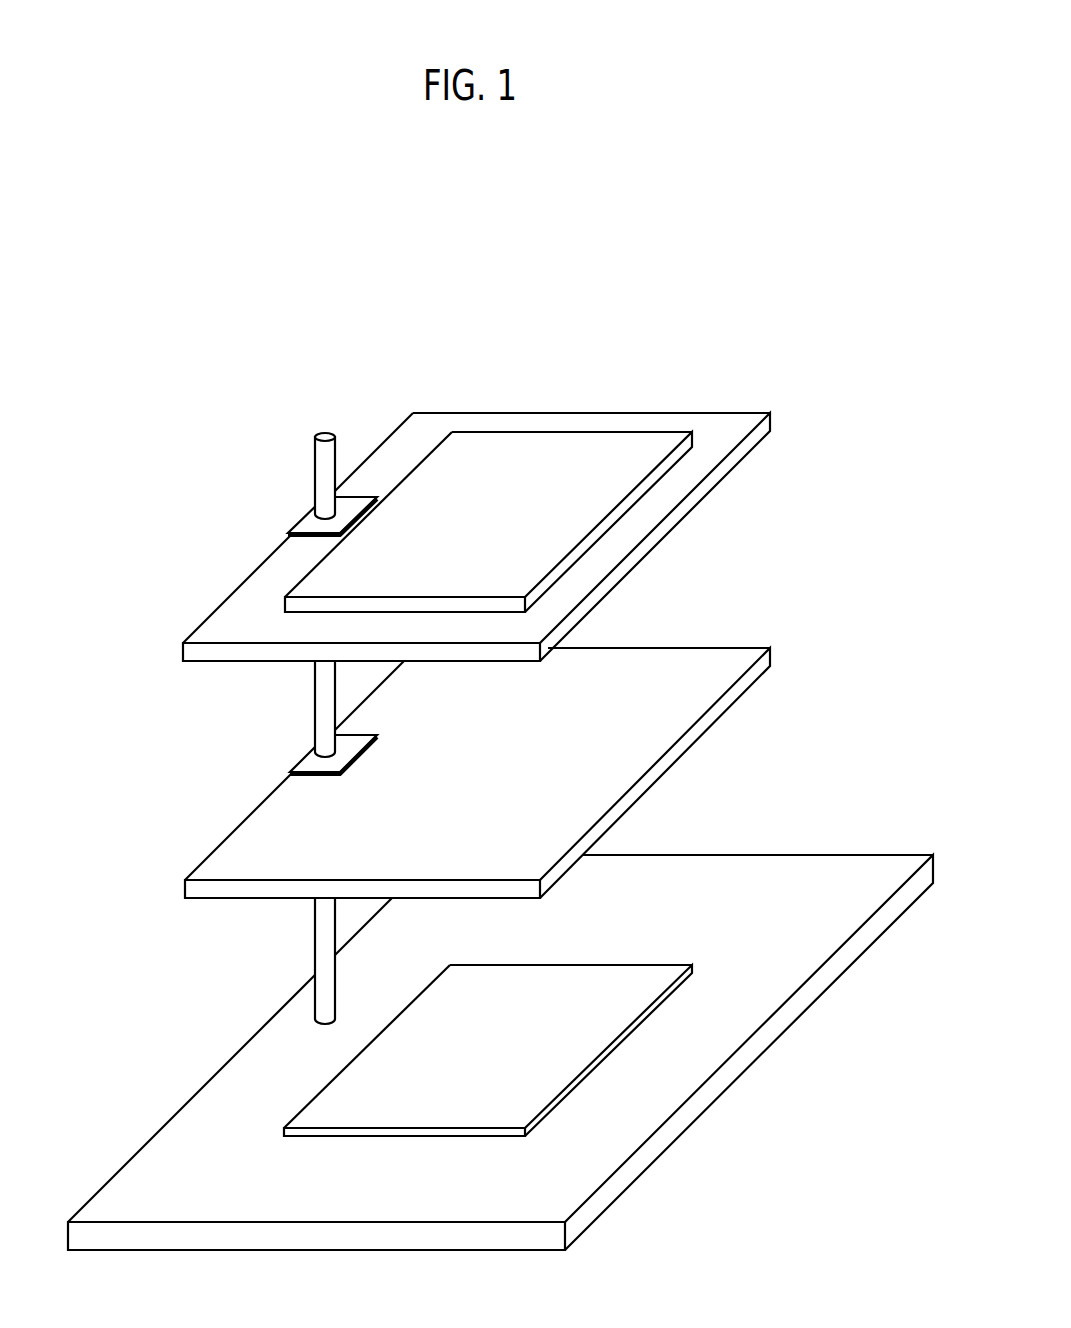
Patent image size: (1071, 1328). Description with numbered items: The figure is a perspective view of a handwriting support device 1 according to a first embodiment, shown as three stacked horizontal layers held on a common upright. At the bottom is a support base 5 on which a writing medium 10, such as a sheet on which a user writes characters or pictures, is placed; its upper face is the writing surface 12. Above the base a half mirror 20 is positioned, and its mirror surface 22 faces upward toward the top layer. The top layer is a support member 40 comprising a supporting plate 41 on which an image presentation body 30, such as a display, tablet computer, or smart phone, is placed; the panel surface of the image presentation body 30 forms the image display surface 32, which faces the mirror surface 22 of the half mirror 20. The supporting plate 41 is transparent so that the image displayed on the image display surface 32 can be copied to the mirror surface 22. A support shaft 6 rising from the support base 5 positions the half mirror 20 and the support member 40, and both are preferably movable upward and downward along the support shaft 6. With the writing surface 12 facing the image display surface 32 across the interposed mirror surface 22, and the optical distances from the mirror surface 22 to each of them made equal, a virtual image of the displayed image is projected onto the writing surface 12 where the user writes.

The handwriting support device 1 is at (97, 522).
The support base 5 is at (578, 1223).
The support shaft 6 is at (315, 483).
The writing medium 10 is at (632, 983).
The writing surface 12 is at (570, 993).
The half mirror 20 is at (715, 713).
The mirror surface 22 is at (690, 675).
The image presentation body 30 is at (490, 447).
The image display surface 32 is at (640, 502).
The support member 40 is at (805, 402).
The supporting plate 41 is at (605, 420).